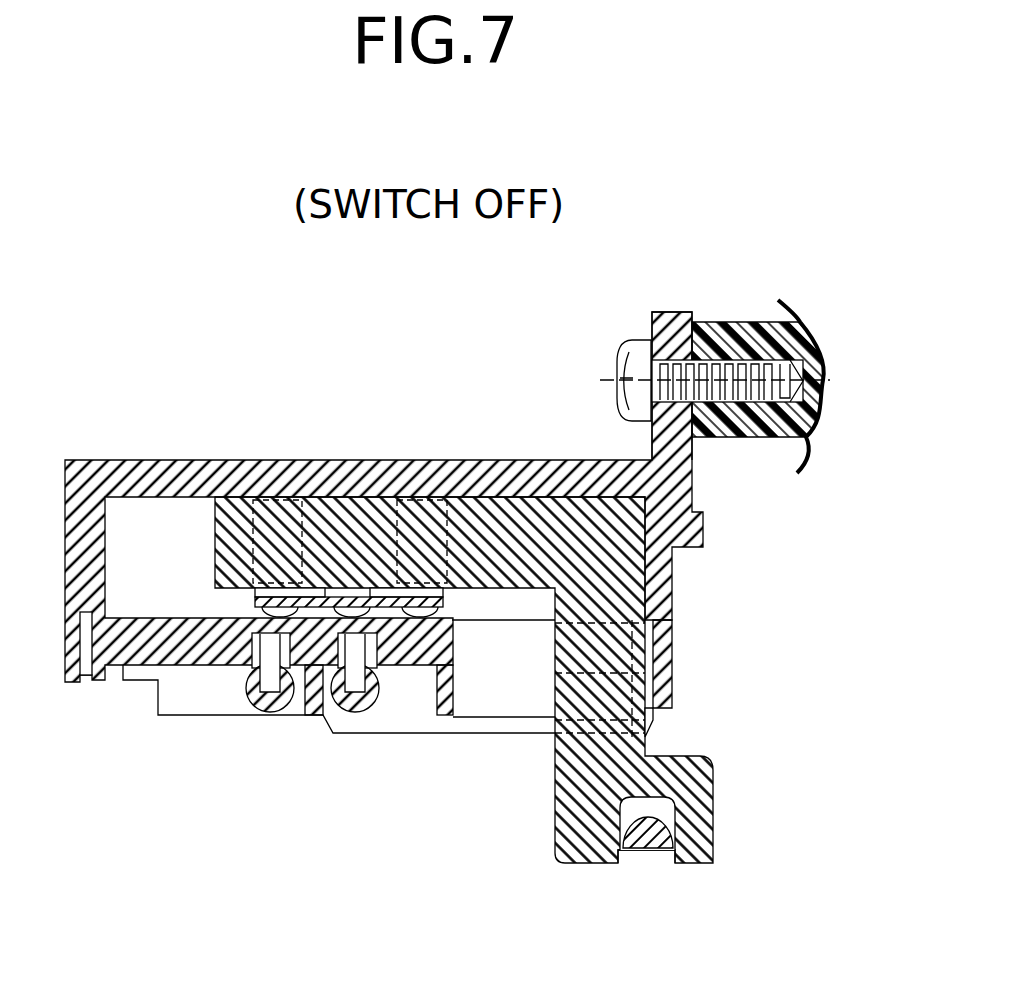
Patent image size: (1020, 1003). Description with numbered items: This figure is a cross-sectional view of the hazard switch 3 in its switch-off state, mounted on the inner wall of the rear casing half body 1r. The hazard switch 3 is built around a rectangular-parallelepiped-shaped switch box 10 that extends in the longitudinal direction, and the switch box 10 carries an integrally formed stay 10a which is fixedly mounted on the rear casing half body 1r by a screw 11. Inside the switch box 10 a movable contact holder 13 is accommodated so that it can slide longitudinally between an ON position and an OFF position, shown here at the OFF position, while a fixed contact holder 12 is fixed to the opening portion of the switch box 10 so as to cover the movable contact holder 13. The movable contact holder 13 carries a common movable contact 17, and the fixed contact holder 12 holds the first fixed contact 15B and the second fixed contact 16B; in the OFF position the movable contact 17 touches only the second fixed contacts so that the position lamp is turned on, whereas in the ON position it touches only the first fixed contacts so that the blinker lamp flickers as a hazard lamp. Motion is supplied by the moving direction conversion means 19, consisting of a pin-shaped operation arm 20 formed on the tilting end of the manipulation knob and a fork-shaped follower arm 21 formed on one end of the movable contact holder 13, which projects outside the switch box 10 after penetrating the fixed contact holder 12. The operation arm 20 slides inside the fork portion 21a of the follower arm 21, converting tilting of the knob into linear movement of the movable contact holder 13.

The hazard switch 3 is at (207, 452).
The switch box 10 is at (353, 460).
The stay 10a is at (662, 312).
The screw 11 is at (617, 373).
The rear casing half body 1r is at (742, 322).
The movable contact holder 13 is at (522, 520).
The movable contact 17 is at (256, 603).
The fixed contact holder 12 is at (213, 715).
The first fixed contact 15B is at (270, 712).
The second fixed contact 16B is at (357, 710).
The moving direction conversion means 19 is at (724, 797).
The operation arm 20 is at (640, 838).
The follower arm 21 is at (672, 677).
The fork portion 21a is at (590, 863).